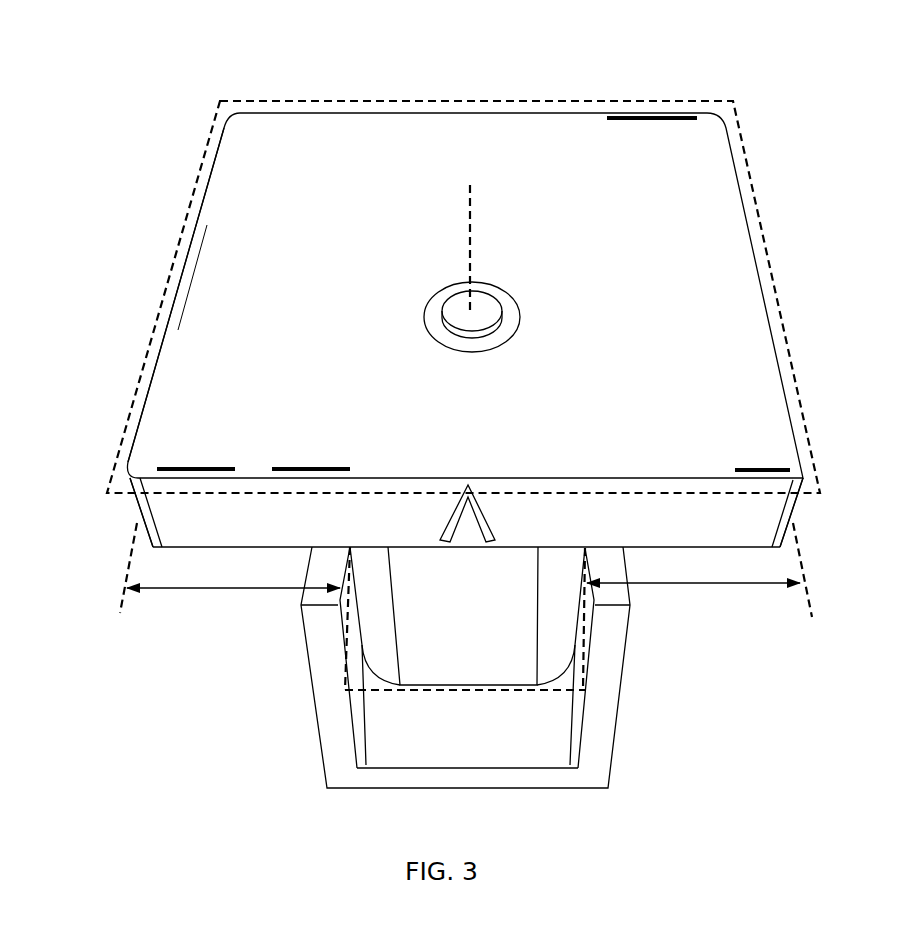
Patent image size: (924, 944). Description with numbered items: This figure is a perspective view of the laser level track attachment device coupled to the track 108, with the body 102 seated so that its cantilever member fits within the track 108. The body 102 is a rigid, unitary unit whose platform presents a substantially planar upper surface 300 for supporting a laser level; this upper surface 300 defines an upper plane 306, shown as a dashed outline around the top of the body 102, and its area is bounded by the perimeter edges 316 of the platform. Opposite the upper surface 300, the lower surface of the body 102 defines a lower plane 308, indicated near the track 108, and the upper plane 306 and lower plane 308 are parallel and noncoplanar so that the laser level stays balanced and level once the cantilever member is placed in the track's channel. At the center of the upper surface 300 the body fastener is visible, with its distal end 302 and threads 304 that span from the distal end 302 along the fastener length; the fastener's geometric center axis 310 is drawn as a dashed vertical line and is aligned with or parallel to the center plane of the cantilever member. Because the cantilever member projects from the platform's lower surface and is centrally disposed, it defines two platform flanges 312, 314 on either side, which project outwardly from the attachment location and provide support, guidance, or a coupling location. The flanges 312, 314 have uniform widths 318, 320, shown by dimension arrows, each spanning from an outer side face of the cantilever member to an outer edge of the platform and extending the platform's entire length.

The body 102 is at (737, 282).
The track 108 is at (327, 708).
The upper surface 300 is at (476, 330).
The distal end 302 is at (465, 303).
The threads 304 is at (447, 323).
The upper plane 306 is at (533, 100).
The lower plane 308 is at (348, 676).
The center axis 310 is at (471, 260).
The platform flange 312 is at (190, 545).
The platform flange 314 is at (732, 547).
The perimeter edges 316 is at (163, 343).
The width 318 is at (210, 590).
The width 320 is at (755, 585).